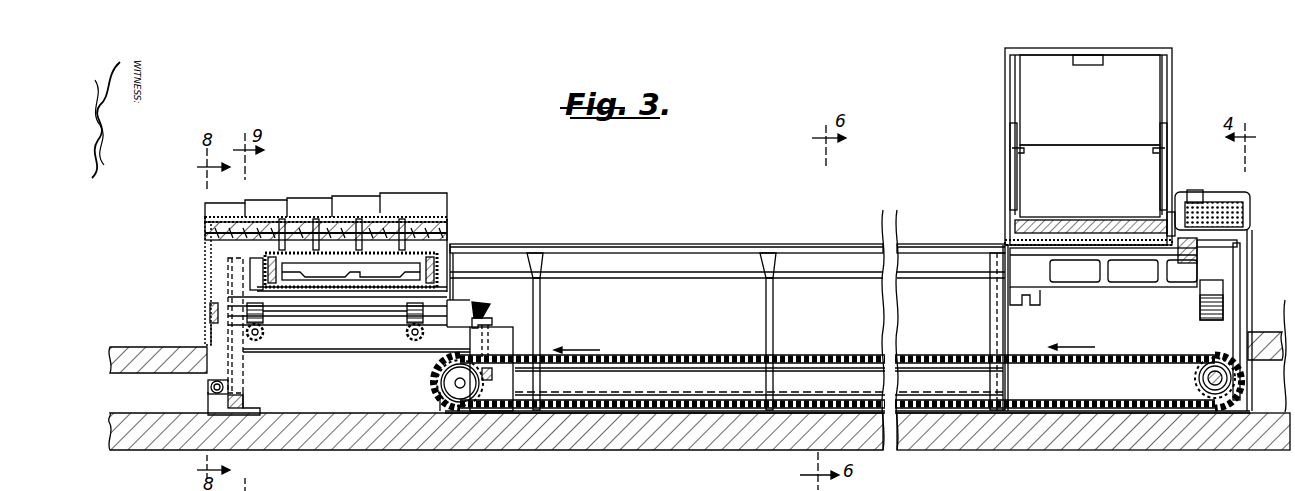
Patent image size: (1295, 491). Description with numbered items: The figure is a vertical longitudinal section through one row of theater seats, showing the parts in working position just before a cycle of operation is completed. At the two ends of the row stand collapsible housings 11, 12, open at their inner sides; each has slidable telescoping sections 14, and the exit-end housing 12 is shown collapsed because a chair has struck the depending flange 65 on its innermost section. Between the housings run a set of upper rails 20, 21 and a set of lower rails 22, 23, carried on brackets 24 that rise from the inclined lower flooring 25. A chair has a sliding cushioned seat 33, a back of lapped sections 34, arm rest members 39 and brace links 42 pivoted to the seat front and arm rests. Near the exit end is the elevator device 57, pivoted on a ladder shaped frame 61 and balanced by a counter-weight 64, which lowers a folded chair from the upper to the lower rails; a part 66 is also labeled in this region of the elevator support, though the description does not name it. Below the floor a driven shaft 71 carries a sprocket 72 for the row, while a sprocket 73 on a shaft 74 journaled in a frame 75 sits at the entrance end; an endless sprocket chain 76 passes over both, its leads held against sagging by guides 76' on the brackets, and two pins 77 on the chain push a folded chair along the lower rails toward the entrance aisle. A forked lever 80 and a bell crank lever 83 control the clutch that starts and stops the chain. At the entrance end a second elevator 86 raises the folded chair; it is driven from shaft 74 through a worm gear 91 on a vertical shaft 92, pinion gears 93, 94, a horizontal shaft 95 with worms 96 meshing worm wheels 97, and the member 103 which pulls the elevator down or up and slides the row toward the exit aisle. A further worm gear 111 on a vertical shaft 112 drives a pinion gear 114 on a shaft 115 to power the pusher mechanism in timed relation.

The collapsible housing 11 is at (385, 195).
The collapsible housing 12 is at (1248, 208).
The telescoping section 14 is at (1190, 200).
The upper rail 20 is at (651, 246).
The upper rail 21 is at (843, 356).
The lower rail 22 is at (656, 278).
The lower rail 23 is at (722, 390).
The bracket 24 is at (543, 322).
The lower flooring 25 is at (693, 433).
The sliding cushioned seat 33 is at (1117, 225).
The back 34 is at (1088, 146).
The arm rest member 39 is at (1018, 153).
The brace link 42 is at (1020, 193).
The elevator device 57 is at (1197, 258).
The ladder shaped frame 61 is at (1107, 287).
The counter-weight 64 is at (1200, 318).
The depending flange 65 is at (1172, 222).
The bracket 66 is at (1040, 298).
The driven shaft 71 is at (1203, 380).
The sprocket 72 is at (1196, 375).
The sprocket 73 is at (442, 376).
The shaft 74 is at (440, 383).
The frame 75 is at (340, 350).
The endless sprocket chain 76 is at (837, 343).
The guide 76' is at (837, 361).
The pin 77 is at (440, 395).
The forked lever 80 is at (1240, 313).
The bell crank lever 83 is at (1220, 245).
The elevator 86 is at (243, 381).
The worm gear 91 is at (497, 397).
The vertical shaft 92 is at (481, 346).
The pinion gear 93 is at (492, 318).
The pinion gear 94 is at (480, 303).
The horizontal shaft 95 is at (333, 312).
The worm 96 is at (264, 318).
The worm wheel 97 is at (425, 334).
The combined elevator actuating arm and chair slider member 103 is at (253, 272).
The worm gear 111 is at (210, 312).
The vertical shaft 112 is at (205, 337).
The pinion gear 114 is at (210, 387).
The shaft 115 is at (210, 393).